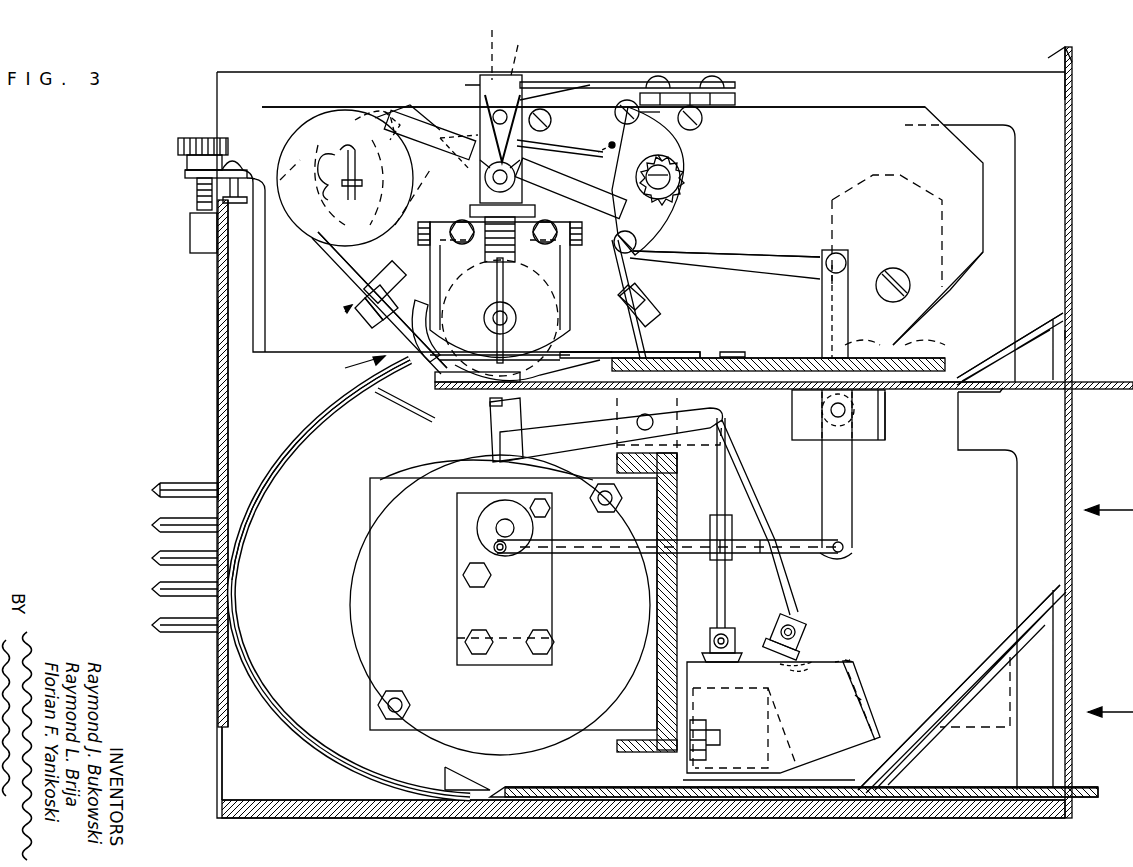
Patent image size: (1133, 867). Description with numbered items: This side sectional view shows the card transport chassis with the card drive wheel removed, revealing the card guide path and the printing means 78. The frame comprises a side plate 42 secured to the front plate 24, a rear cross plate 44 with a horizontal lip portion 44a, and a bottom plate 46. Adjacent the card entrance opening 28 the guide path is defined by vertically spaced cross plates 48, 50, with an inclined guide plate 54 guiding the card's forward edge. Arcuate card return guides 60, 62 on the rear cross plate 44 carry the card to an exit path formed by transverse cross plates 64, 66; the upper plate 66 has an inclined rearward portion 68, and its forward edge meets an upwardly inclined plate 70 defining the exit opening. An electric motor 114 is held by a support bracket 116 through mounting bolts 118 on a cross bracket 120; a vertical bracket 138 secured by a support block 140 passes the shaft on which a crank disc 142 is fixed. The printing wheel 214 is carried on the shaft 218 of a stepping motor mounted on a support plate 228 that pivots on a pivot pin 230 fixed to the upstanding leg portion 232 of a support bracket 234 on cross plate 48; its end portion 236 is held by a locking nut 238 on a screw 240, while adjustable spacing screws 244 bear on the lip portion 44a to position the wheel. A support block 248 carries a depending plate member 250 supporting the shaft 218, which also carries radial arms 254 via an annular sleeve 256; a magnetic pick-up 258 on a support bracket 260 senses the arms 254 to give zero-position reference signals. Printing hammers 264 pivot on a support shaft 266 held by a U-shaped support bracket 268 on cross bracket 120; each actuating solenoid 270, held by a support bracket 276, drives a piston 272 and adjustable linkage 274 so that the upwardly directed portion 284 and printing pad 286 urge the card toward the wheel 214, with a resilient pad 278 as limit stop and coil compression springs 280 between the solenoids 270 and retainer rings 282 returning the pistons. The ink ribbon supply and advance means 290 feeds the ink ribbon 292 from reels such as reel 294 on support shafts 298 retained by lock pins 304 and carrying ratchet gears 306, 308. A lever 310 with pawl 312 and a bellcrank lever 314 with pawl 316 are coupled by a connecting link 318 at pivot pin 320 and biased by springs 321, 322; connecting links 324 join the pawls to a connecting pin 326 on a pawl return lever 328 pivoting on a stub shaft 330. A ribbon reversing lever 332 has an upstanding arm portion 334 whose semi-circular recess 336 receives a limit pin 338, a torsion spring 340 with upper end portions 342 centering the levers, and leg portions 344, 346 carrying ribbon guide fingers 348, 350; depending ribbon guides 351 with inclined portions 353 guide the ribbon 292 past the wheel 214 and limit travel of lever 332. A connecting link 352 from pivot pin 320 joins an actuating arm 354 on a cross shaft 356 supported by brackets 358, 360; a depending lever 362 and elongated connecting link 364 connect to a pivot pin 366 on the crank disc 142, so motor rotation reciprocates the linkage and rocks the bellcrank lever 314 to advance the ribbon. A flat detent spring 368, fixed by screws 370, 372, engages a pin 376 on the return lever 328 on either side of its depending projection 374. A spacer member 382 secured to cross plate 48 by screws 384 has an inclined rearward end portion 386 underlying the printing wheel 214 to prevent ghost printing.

The front plate 24 is at (1072, 60).
The card entrance opening 28 is at (1075, 332).
The side plate 42 is at (240, 770).
The rear cross plate 44 is at (218, 403).
The lip portion 44a is at (218, 228).
The bottom plate 46 is at (470, 812).
The upper cross plate 48 is at (795, 360).
The lower cross plate 50 is at (945, 390).
The inclined guide plate 54 is at (1040, 340).
The card return guide 60 is at (265, 478).
The card return guide 62 is at (292, 442).
The lower transverse cross plate 64 is at (580, 806).
The upper transverse cross plate 66 is at (582, 787).
The upwardly inclined rearward portion 68 is at (455, 778).
The upwardly inclined plate 70 is at (975, 660).
The printing means 78 is at (345, 368).
The electric motor 114 is at (352, 580).
The support bracket 116 is at (352, 665).
The mounting bolts 118 is at (592, 505).
The cross bracket 120 is at (660, 750).
The vertical bracket 138 is at (457, 610).
The support block 140 is at (500, 655).
The crank disc 142 is at (478, 528).
The printing wheel 214 is at (470, 385).
The shaft 218 is at (505, 325).
The support plate 228 is at (845, 107).
The pivot pin 230 is at (912, 285).
The upstanding leg portion 232 is at (930, 322).
The support bracket 234 is at (945, 340).
The planar end portion 236 is at (185, 174).
The locking nut 238 is at (185, 138).
The screw 240 is at (197, 195).
The adjustable spacing screws 244 is at (236, 152).
The support block 248 is at (566, 300).
The plate member 250 is at (432, 310).
The radial arms 254 is at (497, 285).
The annular sleeve 256 is at (510, 312).
The magnetic pick-up 258 is at (515, 250).
The support bracket 260 is at (470, 210).
The printing hammers 264 is at (611, 435).
The support shaft 266 is at (637, 425).
The U-shaped support bracket 268 is at (676, 445).
The actuating solenoid 270 is at (855, 700).
The piston 272 is at (800, 618).
The adjustable linkage 274 is at (735, 490).
The support bracket 276 is at (790, 762).
The resilient pad 278 is at (440, 458).
The coil compression springs 280 is at (848, 665).
The annular retainer rings 282 is at (822, 645).
The upwardly directed portion 284 is at (492, 420).
The printing pad 286 is at (490, 405).
The ink ribbon supply and advance means 290 is at (345, 312).
The ink ribbon 292 is at (405, 330).
The ribbon reel 294 is at (312, 248).
The reel support shafts 298 is at (330, 195).
The releasable lock pins 304 is at (320, 150).
The ratchet gear 306 is at (366, 222).
The ratchet gear 308 is at (672, 178).
The lever 310 is at (358, 115).
The pawl 312 is at (312, 118).
The bellcrank lever 314 is at (670, 235).
The pawl 316 is at (680, 165).
The connecting link 318 is at (405, 95).
The pivot pin 320 is at (638, 242).
The bias spring 321 is at (380, 108).
The bias spring 322 is at (655, 123).
The connecting links 324 is at (470, 132).
The connecting pin 326 is at (478, 165).
The pawl return lever 328 is at (482, 75).
The stub shaft 330 is at (515, 174).
The ribbon reversing lever 332 is at (610, 143).
The upstanding arm portion 334 is at (540, 138).
The semi-circular recess 336 is at (525, 100).
The limit pin 338 is at (480, 95).
The torsion spring 340 is at (490, 180).
The upper end portions 342 is at (492, 115).
The leg portion 344 is at (365, 298).
The leg portion 346 is at (635, 268).
The ribbon guide fingers 348 is at (388, 275).
The ribbon guide fingers 350 is at (365, 310).
The depending ribbon guide 351 is at (432, 275).
The connecting link 352 is at (795, 260).
The lower inclined portion 353 is at (436, 330).
The actuating arm 354 is at (822, 290).
The cross shaft 356 is at (838, 420).
The support bracket 358 is at (893, 428).
The support bracket 360 is at (800, 420).
The depending lever 362 is at (850, 528).
The connecting link 364 is at (808, 553).
The pivot pin 366 is at (502, 553).
The detent spring 368 is at (620, 84).
The screw 370 is at (740, 47).
The screw 372 is at (662, 78).
The depending projection 374 is at (493, 44).
The pin 376 is at (523, 56).
The spacer member 382 is at (655, 352).
The screws 384 is at (750, 327).
The rearward end portion 386 is at (520, 385).